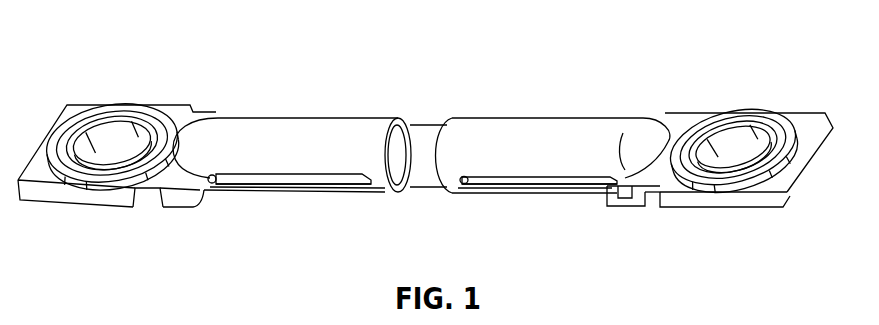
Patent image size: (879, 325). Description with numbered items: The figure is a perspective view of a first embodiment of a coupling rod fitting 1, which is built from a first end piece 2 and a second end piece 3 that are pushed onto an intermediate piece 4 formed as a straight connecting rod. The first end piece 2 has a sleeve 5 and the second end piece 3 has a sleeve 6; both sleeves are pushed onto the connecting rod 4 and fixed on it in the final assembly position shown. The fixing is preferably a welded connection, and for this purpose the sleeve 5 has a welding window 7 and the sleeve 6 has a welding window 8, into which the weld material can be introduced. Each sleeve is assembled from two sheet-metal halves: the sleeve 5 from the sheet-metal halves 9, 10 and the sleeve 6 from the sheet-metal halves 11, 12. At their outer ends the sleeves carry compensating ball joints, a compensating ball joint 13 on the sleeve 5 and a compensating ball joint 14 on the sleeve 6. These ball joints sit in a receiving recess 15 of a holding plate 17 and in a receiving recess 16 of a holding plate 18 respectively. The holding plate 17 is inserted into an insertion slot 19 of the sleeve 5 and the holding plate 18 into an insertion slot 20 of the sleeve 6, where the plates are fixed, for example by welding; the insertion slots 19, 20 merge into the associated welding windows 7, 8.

The coupling rod fitting 1 is at (405, 78).
The first end piece 2 is at (308, 108).
The second end piece 3 is at (595, 106).
The intermediate piece 4 is at (417, 173).
The sleeve 5 is at (276, 194).
The sleeve 6 is at (537, 194).
The welding window 7 is at (327, 181).
The welding window 8 is at (587, 183).
The sheet-metal half 9 is at (230, 194).
The sheet-metal half 10 is at (337, 137).
The sheet-metal half 11 is at (482, 194).
The sheet-metal half 12 is at (560, 150).
The compensating ball joint 13 is at (108, 135).
The compensating ball joint 14 is at (735, 138).
The receiving recess 15 is at (110, 163).
The receiving recess 16 is at (735, 168).
The holding plate 17 is at (36, 184).
The holding plate 18 is at (774, 184).
The insertion slot 19 is at (211, 186).
The insertion slot 20 is at (608, 196).